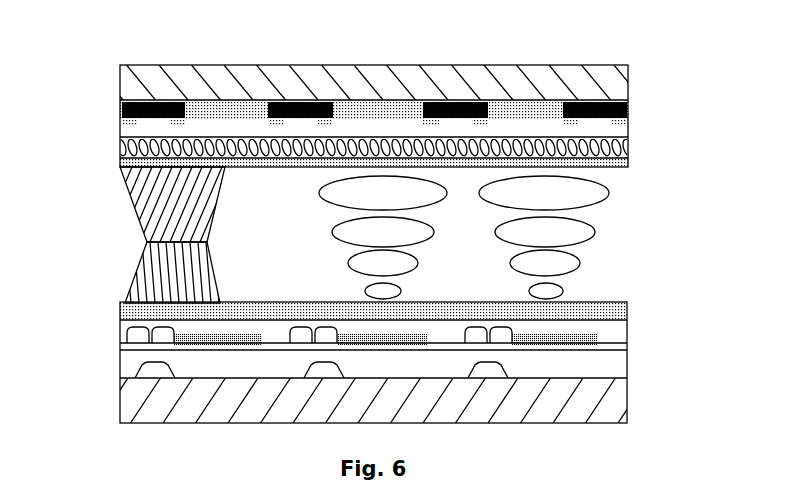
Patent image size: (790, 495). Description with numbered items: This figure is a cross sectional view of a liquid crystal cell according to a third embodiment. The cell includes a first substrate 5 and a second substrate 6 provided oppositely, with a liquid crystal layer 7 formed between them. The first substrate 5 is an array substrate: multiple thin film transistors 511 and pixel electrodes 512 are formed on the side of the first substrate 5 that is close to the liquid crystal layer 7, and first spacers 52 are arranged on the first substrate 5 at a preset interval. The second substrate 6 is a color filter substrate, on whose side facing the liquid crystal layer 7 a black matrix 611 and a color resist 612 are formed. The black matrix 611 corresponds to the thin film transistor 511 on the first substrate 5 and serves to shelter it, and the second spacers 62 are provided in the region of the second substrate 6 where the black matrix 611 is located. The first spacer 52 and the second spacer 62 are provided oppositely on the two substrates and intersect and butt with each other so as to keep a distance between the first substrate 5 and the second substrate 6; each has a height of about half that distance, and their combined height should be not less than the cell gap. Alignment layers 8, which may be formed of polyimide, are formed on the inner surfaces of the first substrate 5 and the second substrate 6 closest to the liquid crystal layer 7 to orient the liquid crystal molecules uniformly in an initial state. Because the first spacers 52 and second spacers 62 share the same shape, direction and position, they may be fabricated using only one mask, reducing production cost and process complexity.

The second substrate 6 is at (630, 97).
The color resist 612 is at (492, 65).
The black matrix 611 is at (628, 115).
The pixel electrode 512 is at (120, 152).
The alignment layer 8 is at (628, 167).
The second spacer 62 is at (138, 218).
The first spacer 52 is at (131, 287).
The liquid crystal layer 7 is at (635, 247).
The first substrate 5 is at (628, 400).
The thin film transistor 511 is at (120, 342).